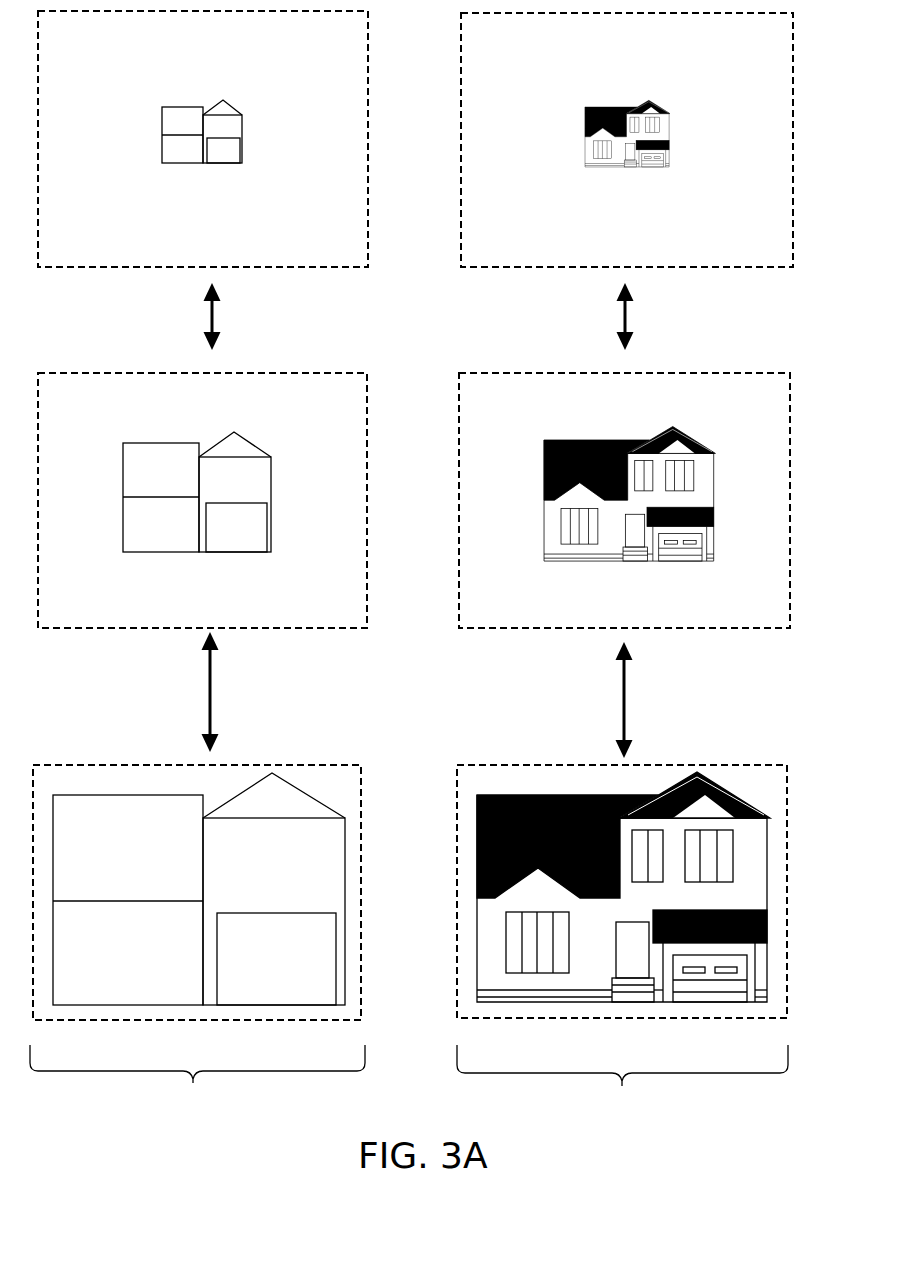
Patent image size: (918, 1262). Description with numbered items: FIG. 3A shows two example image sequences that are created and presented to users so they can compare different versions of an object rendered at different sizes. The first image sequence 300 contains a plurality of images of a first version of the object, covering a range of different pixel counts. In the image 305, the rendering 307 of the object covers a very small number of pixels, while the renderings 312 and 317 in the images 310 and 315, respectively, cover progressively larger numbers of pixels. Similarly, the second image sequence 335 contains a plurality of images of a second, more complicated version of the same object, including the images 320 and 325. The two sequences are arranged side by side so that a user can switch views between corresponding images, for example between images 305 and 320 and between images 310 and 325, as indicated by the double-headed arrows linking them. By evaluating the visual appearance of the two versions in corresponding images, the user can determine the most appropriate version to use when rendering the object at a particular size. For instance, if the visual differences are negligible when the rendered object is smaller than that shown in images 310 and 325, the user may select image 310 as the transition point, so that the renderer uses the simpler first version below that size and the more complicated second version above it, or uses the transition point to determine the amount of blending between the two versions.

The image sequence 300 is at (301, 561).
The image 305 is at (573, 801).
The rendering 307 is at (242, 158).
The image 310 is at (202, 500).
The rendering 312 is at (269, 550).
The image 315 is at (363, 982).
The rendering 317 is at (332, 844).
The image 320 is at (627, 140).
The image 325 is at (624, 500).
The image sequence 335 is at (625, 564).